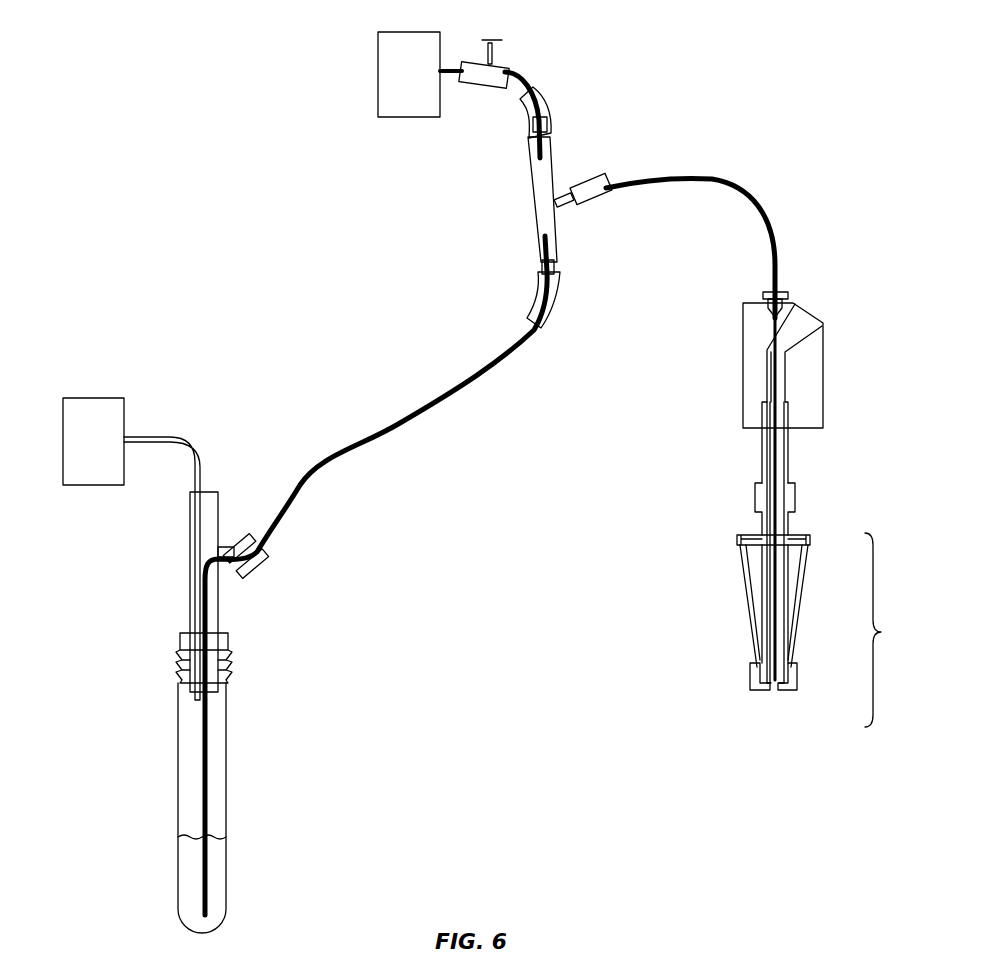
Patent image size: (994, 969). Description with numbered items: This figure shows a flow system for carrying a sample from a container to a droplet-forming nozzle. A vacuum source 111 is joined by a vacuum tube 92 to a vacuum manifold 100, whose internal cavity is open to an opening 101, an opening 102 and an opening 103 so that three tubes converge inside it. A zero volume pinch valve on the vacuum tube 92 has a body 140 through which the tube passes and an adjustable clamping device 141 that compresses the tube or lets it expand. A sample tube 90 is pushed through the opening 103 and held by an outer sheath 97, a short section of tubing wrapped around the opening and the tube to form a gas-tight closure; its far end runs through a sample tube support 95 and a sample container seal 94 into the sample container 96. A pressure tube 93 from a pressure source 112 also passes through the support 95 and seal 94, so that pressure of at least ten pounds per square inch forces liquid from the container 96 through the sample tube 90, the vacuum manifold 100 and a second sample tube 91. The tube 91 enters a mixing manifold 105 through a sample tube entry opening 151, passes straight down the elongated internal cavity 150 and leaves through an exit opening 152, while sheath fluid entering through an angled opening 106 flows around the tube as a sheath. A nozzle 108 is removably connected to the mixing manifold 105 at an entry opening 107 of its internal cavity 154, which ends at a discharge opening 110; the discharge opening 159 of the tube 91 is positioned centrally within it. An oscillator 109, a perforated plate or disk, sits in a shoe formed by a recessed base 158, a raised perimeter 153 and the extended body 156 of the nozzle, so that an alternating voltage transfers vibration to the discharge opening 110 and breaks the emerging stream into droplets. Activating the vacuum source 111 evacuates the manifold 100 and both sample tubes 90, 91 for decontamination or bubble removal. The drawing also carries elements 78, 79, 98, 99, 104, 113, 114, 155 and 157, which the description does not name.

The cone wall 78 is at (796, 582).
The needle tip opening 79 is at (781, 690).
The sample tube 90 is at (268, 532).
The sample tube 91 is at (710, 177).
The vacuum tube 92 is at (518, 83).
The pressure tube 93 is at (184, 442).
The sample container seal 94 is at (228, 634).
The sample tube support 95 is at (218, 492).
The sample container 96 is at (227, 768).
The outer sheath 97 is at (558, 297).
The connector 98 is at (577, 188).
The sleeve 99 is at (546, 100).
The vacuum manifold 100 is at (533, 193).
The opening 101 is at (546, 128).
The opening 102 is at (566, 208).
The opening 103 is at (556, 267).
The cap 104 is at (789, 293).
The mixing manifold 105 is at (823, 342).
The opening 106 is at (806, 318).
The entry opening 107 is at (793, 498).
The nozzle 108 is at (897, 630).
The oscillator 109 is at (755, 535).
The discharge opening 110 is at (781, 679).
The vacuum source 111 is at (378, 32).
The pressure source 112 is at (125, 398).
The connector 113 is at (222, 552).
The connector 114 is at (250, 569).
The body 140 is at (477, 90).
The clamping device 141 is at (498, 37).
The internal cavity 150 is at (768, 393).
The sample tube entry opening 151 is at (783, 287).
The exit opening 152 is at (786, 398).
The raised perimeter 153 is at (738, 537).
The internal cavity 154 is at (781, 622).
The tube wall 155 is at (770, 470).
The extended body 156 is at (760, 522).
The tube outer wall 157 is at (746, 602).
The base 158 is at (749, 553).
The discharge opening 159 is at (769, 688).